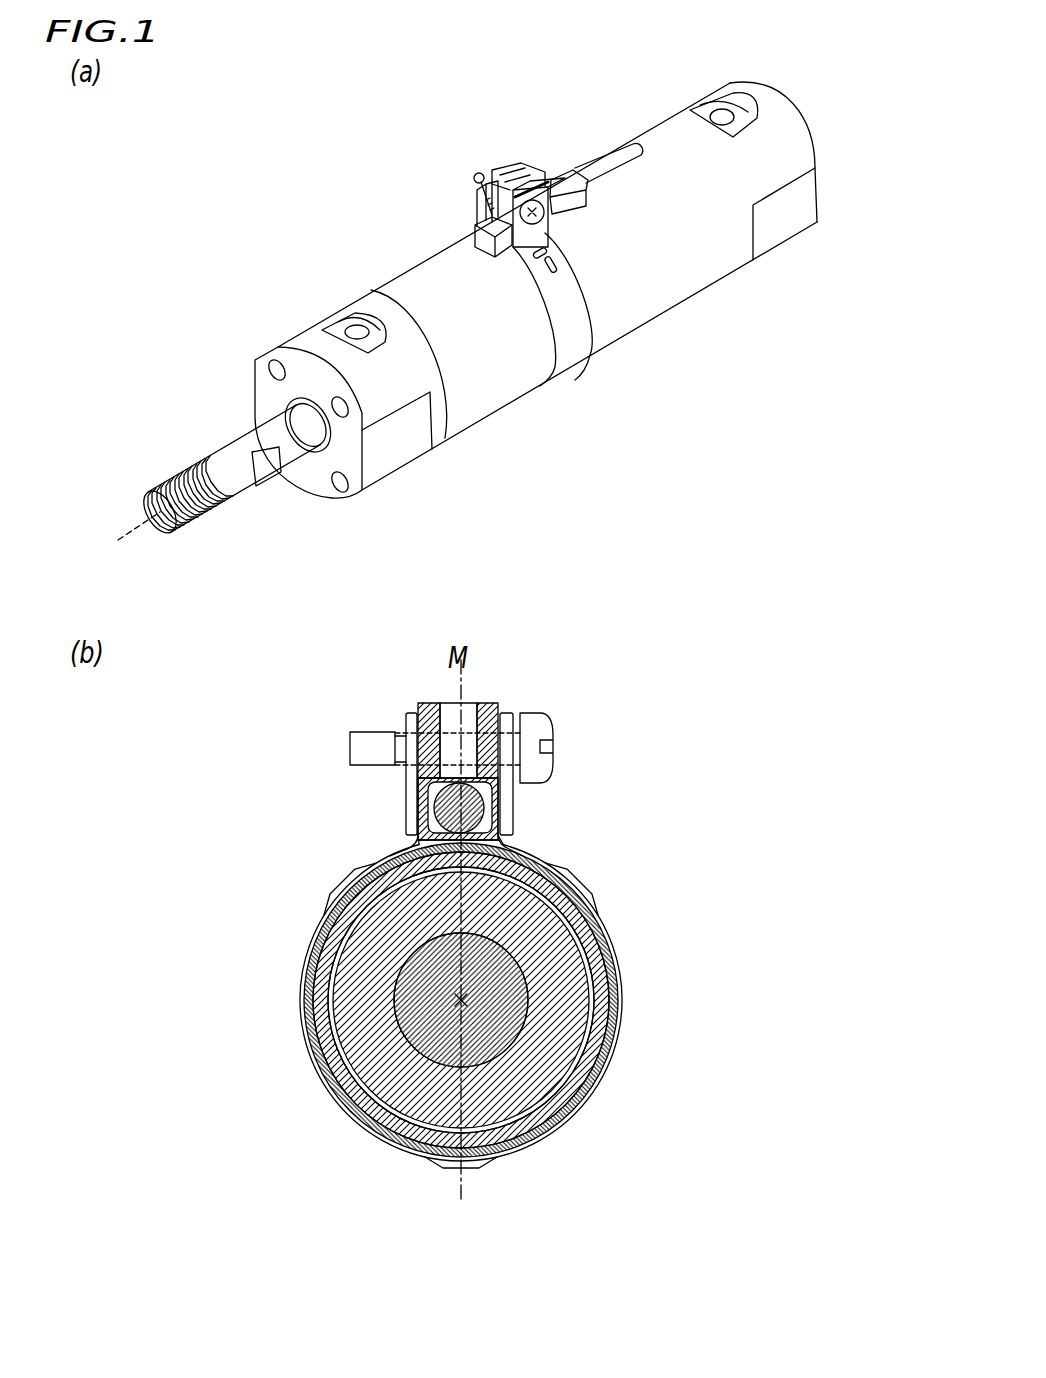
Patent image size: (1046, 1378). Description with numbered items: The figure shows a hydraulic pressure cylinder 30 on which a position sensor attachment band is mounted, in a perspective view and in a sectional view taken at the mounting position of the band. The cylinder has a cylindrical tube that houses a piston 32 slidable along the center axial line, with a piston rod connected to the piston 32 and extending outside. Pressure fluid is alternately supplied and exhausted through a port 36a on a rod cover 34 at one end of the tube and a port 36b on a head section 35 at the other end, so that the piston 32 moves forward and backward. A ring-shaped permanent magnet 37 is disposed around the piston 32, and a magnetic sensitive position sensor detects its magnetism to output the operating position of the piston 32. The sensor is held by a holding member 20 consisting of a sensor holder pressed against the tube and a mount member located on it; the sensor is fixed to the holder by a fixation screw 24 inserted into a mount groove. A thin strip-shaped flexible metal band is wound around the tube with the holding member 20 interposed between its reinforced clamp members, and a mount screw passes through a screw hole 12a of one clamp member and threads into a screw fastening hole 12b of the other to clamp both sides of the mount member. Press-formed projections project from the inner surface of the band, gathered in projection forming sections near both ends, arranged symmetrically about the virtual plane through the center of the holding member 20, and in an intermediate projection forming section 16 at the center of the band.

The screw hole 12a is at (514, 783).
The screw fastening hole 12b is at (398, 778).
The projection forming section 16 is at (443, 1173).
The holding member 20 is at (385, 160).
The fixation screw 24 is at (481, 178).
The hydraulic pressure cylinder 30 is at (767, 270).
The piston 32 is at (390, 1075).
The rod cover 34 is at (400, 470).
The head section 35 is at (772, 122).
The port 36a is at (350, 330).
The port 36b is at (718, 110).
The permanent magnet 37 is at (395, 1135).